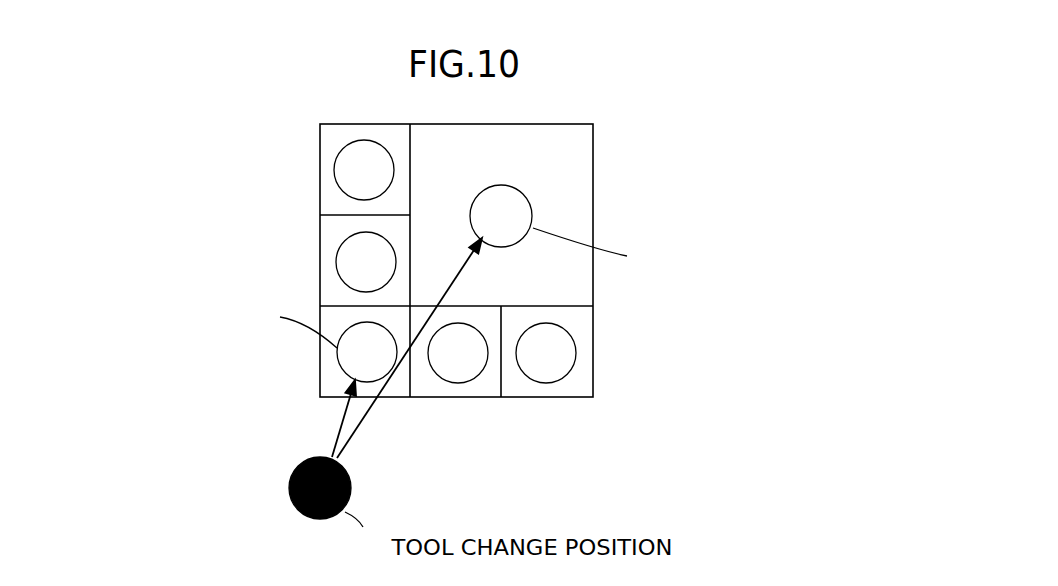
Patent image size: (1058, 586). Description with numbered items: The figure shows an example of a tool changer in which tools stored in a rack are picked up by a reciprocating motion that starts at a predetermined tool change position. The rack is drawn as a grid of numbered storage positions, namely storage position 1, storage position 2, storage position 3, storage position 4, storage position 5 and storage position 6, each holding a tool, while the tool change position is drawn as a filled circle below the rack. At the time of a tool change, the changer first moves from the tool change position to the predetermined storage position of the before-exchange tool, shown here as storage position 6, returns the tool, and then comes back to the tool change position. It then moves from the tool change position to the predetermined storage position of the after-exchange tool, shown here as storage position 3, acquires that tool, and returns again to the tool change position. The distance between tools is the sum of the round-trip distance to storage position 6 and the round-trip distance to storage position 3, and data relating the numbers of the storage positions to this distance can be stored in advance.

The tool storage position 1 (tool pot) 1 is at (458, 353).
The tool storage position 2 (tool pot) 2 is at (546, 353).
The tool storage position 3 (storage position of after-exchange tool) 3 is at (701, 243).
The tool storage position 4 (tool pot) 4 is at (364, 170).
The tool storage position 5 (tool pot) 5 is at (366, 262).
The tool storage position 6 (storage position of before-exchange tool) 6 is at (208, 324).